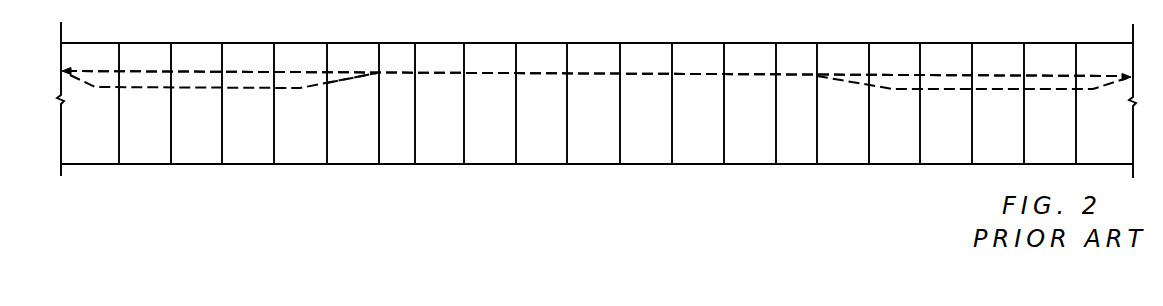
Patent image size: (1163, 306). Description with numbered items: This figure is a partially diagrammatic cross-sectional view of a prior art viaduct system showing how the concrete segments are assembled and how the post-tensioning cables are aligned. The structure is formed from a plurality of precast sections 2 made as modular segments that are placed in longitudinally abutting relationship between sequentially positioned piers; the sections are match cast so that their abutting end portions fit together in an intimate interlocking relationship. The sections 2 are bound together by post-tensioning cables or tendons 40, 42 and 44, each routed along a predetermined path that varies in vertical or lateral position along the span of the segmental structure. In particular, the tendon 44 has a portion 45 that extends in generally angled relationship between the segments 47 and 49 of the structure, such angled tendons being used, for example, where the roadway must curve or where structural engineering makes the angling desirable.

The precast section 2 is at (145, 52).
The post-tensioning cable 40 is at (253, 72).
The post-tensioning cable 42 is at (937, 74).
The post-tensioning tendon 44 is at (641, 74).
The angled portion 45 is at (338, 80).
The segment 47 is at (300, 157).
The segment 49 is at (360, 157).